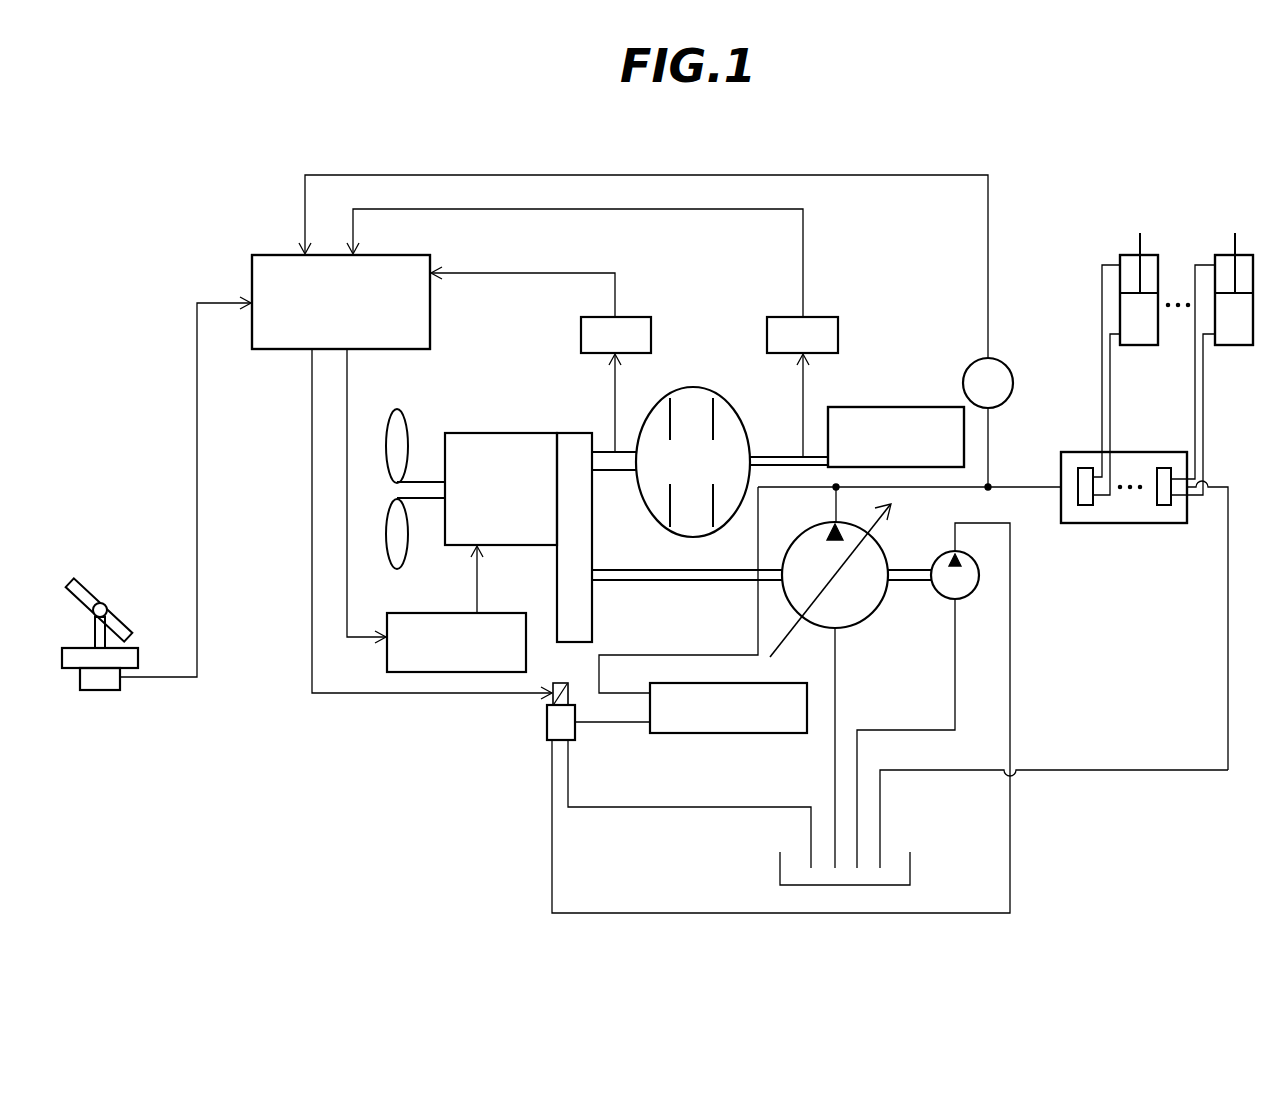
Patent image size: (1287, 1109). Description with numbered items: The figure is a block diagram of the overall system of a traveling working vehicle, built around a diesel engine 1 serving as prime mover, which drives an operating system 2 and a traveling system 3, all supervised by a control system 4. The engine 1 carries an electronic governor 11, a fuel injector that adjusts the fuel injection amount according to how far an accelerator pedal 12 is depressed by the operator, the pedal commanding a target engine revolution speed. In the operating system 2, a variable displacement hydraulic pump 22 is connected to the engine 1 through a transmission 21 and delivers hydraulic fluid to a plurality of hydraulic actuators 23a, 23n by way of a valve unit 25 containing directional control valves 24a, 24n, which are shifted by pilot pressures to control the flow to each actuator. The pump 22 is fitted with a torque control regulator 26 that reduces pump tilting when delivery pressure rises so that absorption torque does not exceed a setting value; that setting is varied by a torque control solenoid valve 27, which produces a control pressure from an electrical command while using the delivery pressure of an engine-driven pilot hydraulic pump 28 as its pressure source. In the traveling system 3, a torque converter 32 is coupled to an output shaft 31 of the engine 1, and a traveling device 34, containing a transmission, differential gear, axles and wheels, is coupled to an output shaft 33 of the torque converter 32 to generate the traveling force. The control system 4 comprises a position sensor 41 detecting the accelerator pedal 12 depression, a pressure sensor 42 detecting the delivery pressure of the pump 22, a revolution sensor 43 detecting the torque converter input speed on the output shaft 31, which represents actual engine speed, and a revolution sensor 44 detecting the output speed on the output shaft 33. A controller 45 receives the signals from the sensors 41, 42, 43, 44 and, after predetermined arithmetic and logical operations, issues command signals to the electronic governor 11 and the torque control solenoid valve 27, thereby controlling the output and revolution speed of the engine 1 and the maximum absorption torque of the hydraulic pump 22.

The diesel engine 1 is at (495, 433).
The operating system 2 is at (1224, 472).
The traveling system 3 is at (874, 360).
The control system 4 is at (231, 239).
The electronic governor 11 is at (437, 613).
The accelerator pedal 12 is at (100, 592).
The transmission 21 is at (580, 433).
The hydraulic pump 22 is at (883, 605).
The hydraulic actuator 23a is at (1128, 255).
The hydraulic actuator 23n is at (1222, 255).
The directional control valve 24a is at (1087, 505).
The directional control valve 24n is at (1163, 505).
The valve unit 25 is at (1075, 452).
The torque control regulator 26 is at (770, 733).
The torque control solenoid valve 27 is at (546, 722).
The pilot hydraulic pump 28 is at (975, 592).
The output shaft 31 is at (612, 472).
The torque converter 32 is at (696, 388).
The output shaft 33 is at (776, 457).
The traveling device 34 is at (922, 407).
The position sensor 41 is at (97, 690).
The pressure sensor 42 is at (1010, 365).
The revolution sensor 43 is at (636, 317).
The revolution sensor 44 is at (777, 317).
The controller 45 is at (272, 350).